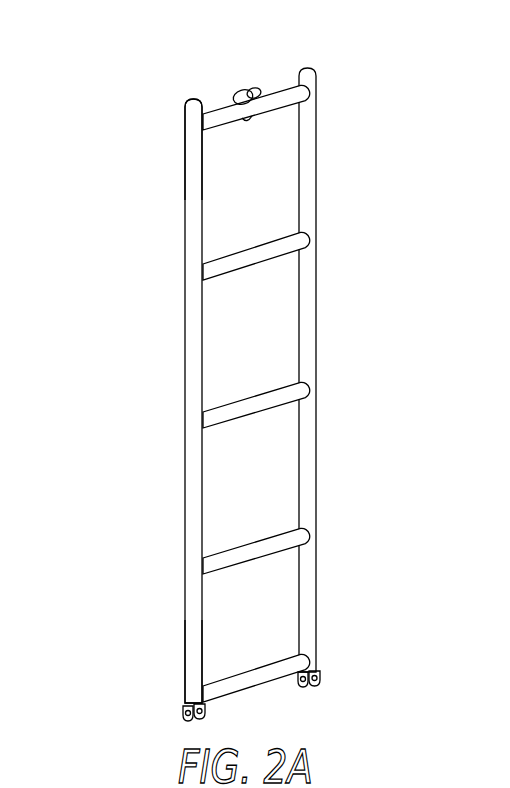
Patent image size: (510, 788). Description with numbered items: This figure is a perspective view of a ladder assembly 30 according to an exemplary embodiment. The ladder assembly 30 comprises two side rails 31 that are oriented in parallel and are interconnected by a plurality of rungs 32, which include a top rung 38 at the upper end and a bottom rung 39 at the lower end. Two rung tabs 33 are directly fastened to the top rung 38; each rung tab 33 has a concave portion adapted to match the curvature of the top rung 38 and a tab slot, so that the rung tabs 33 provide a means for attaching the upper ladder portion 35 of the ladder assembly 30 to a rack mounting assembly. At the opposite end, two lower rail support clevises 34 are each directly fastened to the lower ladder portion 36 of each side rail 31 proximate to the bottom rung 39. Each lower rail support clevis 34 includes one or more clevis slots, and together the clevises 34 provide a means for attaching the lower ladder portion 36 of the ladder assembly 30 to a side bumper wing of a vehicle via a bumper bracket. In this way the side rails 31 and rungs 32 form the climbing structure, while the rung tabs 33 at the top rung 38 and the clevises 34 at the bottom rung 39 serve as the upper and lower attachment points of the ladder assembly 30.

The ladder assembly 30 is at (239, 375).
The side rail 31 is at (310, 285).
The rung 32 is at (299, 388).
The rung tab 33 is at (254, 92).
The lower rail support clevis 34 is at (181, 713).
The upper ladder portion 35 is at (192, 160).
The lower ladder portion 36 is at (195, 663).
The top rung 38 is at (301, 92).
The bottom rung 39 is at (301, 663).